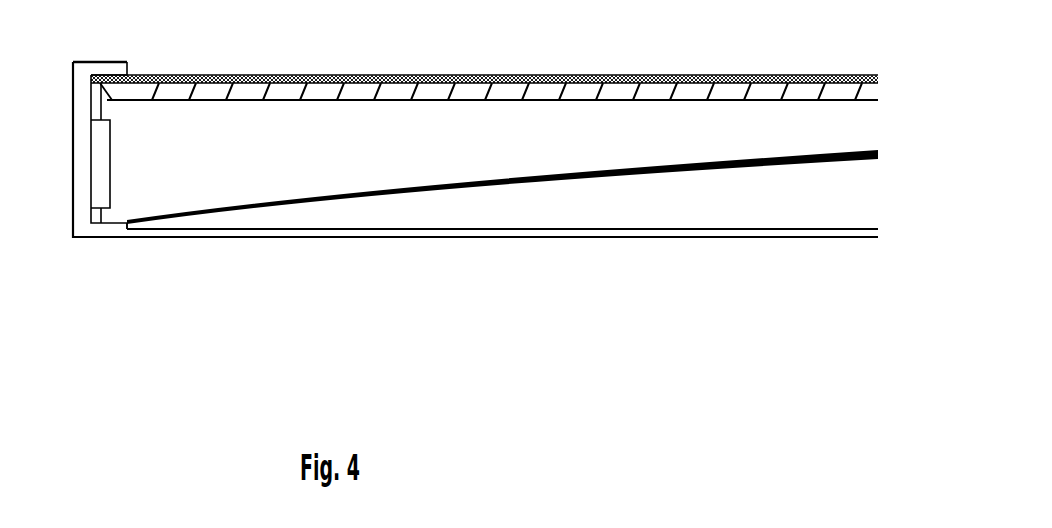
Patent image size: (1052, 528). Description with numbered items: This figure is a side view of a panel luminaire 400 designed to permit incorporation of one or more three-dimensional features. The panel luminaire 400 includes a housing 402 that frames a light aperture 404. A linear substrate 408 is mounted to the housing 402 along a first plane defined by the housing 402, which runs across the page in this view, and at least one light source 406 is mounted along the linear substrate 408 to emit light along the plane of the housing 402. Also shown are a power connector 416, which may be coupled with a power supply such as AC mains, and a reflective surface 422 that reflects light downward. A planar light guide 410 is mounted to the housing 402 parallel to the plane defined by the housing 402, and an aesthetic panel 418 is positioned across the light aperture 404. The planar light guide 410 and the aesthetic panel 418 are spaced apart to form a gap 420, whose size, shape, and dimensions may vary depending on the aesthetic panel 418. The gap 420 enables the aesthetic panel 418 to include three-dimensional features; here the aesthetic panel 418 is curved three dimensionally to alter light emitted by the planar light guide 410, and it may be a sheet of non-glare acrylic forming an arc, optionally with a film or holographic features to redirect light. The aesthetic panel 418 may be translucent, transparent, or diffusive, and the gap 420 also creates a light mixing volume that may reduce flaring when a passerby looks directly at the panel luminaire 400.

The panel luminaire 400 is at (443, 251).
The housing 402 is at (72, 136).
The light aperture 404 is at (128, 229).
The light source 406 is at (130, 75).
The linear substrate 408 is at (93, 78).
The planar light guide 410 is at (267, 100).
The power connector 416 is at (100, 178).
The aesthetic panel 418 is at (272, 207).
The gap 420 is at (342, 183).
The reflective surface 422 is at (202, 75).